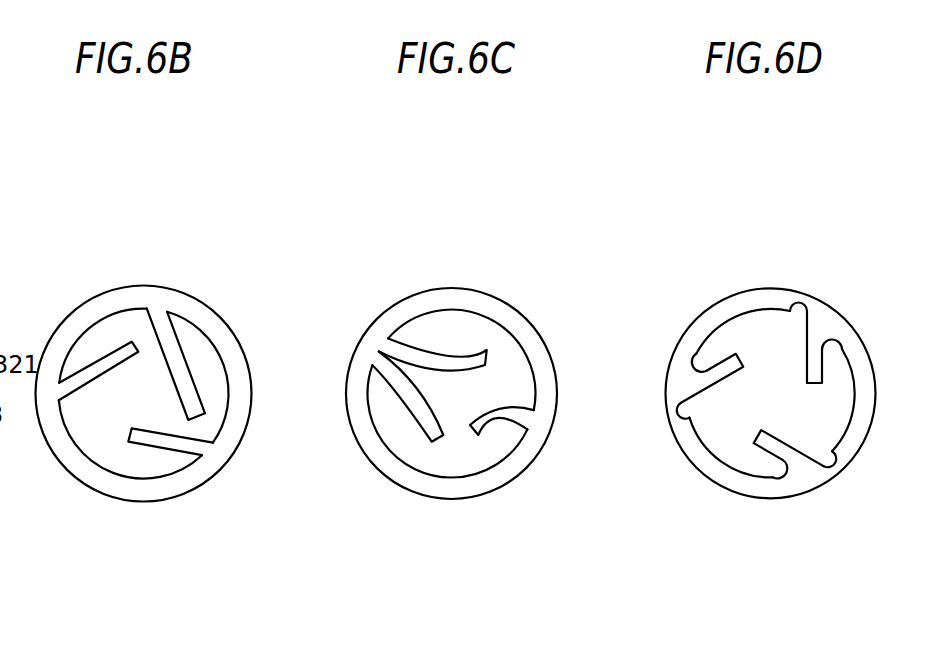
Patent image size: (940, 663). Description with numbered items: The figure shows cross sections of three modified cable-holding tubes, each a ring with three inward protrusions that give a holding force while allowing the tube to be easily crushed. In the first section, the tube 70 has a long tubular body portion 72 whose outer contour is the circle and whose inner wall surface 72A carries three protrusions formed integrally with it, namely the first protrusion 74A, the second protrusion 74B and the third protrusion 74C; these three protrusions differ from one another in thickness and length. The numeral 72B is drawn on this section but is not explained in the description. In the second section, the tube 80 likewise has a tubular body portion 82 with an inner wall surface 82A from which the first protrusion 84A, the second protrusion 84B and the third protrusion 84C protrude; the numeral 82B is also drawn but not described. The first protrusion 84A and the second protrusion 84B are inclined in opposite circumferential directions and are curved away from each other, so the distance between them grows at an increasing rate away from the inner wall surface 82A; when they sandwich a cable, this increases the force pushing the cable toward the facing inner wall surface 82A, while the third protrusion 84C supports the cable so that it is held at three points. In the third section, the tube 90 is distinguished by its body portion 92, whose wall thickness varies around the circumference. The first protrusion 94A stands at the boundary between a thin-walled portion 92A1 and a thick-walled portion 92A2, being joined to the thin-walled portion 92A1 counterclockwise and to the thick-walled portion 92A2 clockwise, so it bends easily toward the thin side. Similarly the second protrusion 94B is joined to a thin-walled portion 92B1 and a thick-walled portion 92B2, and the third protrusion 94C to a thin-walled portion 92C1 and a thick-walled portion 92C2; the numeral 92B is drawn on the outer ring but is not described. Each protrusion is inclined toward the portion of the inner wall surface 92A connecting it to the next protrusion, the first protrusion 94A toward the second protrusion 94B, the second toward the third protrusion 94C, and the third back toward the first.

In FIG. 6B, the tube 70 is at (208, 489).
In FIG. 6B, the body portion 72 is at (162, 359).
In FIG. 6B, the inner wall surface 72A is at (207, 340).
In FIG. 6B, the inner peripheral surface 72B is at (128, 285).
In FIG. 6B, the first protrusion 74A is at (93, 373).
In FIG. 6B, the second protrusion 74B is at (180, 368).
In FIG. 6B, the third protrusion 74C is at (153, 438).
In FIG. 6C, the tube 80 is at (510, 491).
In FIG. 6C, the body portion 82 is at (468, 358).
In FIG. 6C, the inner wall surface 82A is at (510, 334).
In FIG. 6C, the inner peripheral surface 82B is at (442, 288).
In FIG. 6C, the first protrusion 84A is at (410, 393).
In FIG. 6C, the second protrusion 84B is at (435, 360).
In FIG. 6C, the third protrusion 84C is at (495, 420).
In FIG. 6D, the tube 90 is at (858, 505).
In FIG. 6D, the body portion 92 is at (793, 362).
In FIG. 6D, the inner wall surface 92A is at (857, 391).
In FIG. 6D, the thin-walled portion 92A1 is at (668, 410).
In FIG. 6D, the thick-walled portion 92A2 is at (685, 377).
In FIG. 6D, the outer peripheral surface 92B is at (752, 288).
In FIG. 6D, the thin-walled portion 92B1 is at (802, 298).
In FIG. 6D, the thick-walled portion 92B2 is at (816, 318).
In FIG. 6D, the thin-walled portion 92C1 is at (832, 462).
In FIG. 6D, the thick-walled portion 92C2 is at (800, 478).
In FIG. 6D, the first protrusion 94A is at (722, 371).
In FIG. 6D, the second protrusion 94B is at (814, 367).
In FIG. 6D, the third protrusion 94C is at (770, 444).